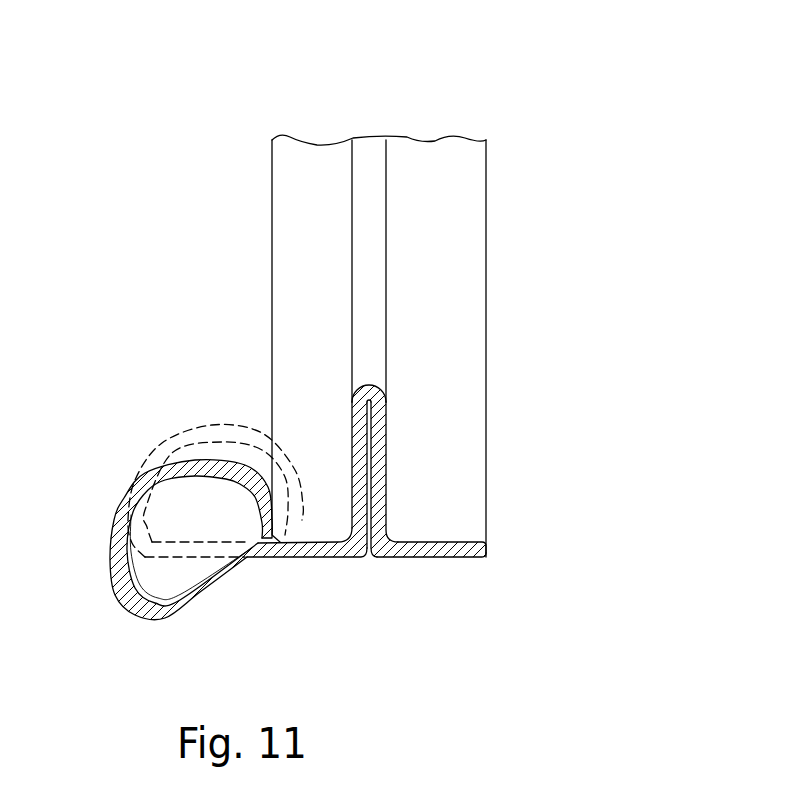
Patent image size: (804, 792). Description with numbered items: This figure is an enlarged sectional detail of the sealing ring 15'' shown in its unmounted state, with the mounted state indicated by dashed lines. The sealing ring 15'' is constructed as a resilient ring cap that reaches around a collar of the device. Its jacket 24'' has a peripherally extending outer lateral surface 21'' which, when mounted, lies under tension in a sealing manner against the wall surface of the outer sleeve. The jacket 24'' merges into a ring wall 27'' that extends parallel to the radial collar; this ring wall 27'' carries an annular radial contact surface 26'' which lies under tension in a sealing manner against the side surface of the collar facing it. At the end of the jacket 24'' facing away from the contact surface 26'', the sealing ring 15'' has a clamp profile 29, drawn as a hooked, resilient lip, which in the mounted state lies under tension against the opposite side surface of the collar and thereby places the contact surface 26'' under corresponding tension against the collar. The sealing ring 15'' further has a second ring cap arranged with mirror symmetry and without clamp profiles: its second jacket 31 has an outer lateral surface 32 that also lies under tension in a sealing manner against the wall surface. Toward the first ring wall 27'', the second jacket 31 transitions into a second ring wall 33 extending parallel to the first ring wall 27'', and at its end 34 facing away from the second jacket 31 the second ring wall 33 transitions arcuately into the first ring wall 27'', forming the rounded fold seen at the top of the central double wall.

The sealing ring 15'' is at (266, 282).
The outer lateral surface 21'' is at (307, 615).
The jacket 24'' is at (312, 605).
The radial contact surface 26'' is at (198, 394).
The ring wall 27'' is at (206, 444).
The clamp profile 29 is at (120, 542).
The second jacket 31 is at (417, 550).
The outer lateral surface 32 is at (438, 573).
The second ring wall 33 is at (380, 477).
The end 34 is at (380, 402).